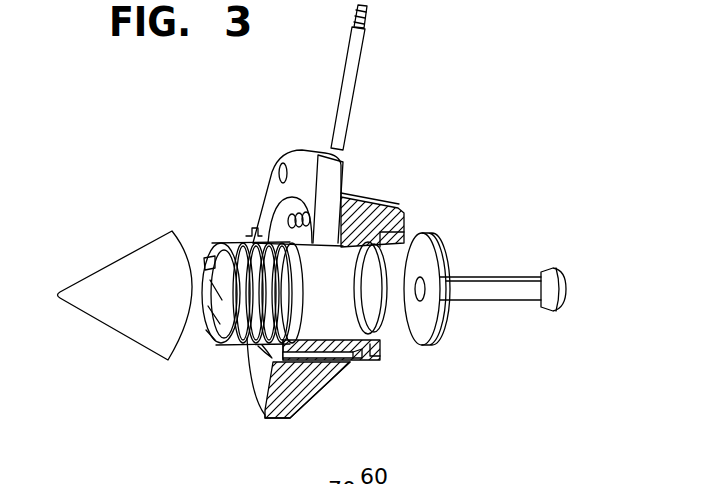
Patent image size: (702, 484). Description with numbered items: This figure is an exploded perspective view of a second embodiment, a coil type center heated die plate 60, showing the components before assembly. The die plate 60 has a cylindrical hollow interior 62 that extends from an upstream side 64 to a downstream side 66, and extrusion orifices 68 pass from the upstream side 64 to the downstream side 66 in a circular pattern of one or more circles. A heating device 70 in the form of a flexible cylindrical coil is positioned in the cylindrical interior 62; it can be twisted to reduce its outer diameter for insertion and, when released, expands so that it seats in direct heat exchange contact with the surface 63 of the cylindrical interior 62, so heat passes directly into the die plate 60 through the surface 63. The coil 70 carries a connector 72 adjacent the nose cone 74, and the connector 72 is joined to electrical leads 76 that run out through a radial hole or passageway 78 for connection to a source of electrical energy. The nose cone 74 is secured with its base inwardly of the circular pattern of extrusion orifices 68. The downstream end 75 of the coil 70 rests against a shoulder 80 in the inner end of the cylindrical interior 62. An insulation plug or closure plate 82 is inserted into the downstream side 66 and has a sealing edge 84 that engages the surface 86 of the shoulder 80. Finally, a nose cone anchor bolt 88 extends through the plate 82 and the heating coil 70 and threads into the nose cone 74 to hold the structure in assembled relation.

The die plate 60 is at (364, 192).
The cylindrical hollow interior 62 is at (345, 362).
The surface of the cylindrical interior 63 is at (252, 243).
The upstream side 64 is at (262, 393).
The downstream side 66 is at (404, 222).
The extrusion orifices 68 is at (319, 366).
The heating device 70 is at (229, 243).
The connector 72 is at (200, 247).
The nose cone 74 is at (105, 313).
The downstream end of the coil 75 is at (262, 352).
The electrical leads 76 is at (363, 48).
The radial hole or passageway 78 is at (321, 157).
The shoulder 80 is at (437, 332).
The insulation plug or closure plate 82 is at (438, 245).
The sealing edge 84 is at (421, 272).
The surface of shoulder 86 is at (380, 335).
The nose cone anchor bolt 88 is at (517, 295).